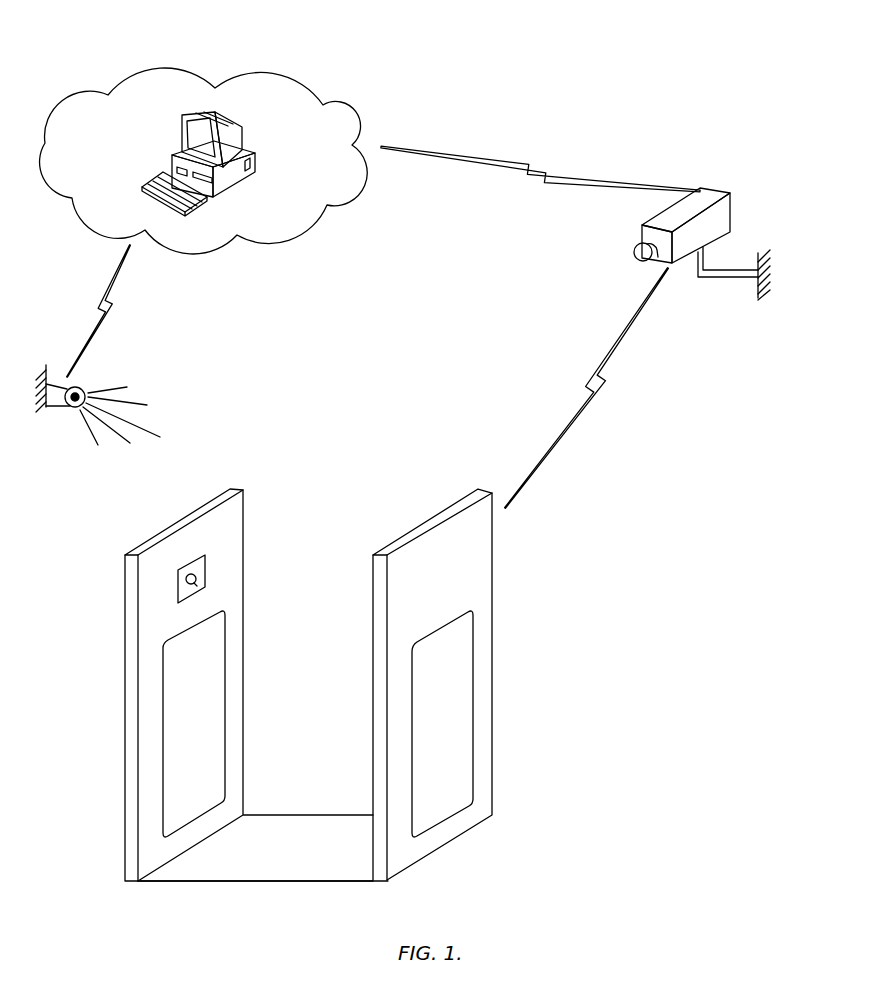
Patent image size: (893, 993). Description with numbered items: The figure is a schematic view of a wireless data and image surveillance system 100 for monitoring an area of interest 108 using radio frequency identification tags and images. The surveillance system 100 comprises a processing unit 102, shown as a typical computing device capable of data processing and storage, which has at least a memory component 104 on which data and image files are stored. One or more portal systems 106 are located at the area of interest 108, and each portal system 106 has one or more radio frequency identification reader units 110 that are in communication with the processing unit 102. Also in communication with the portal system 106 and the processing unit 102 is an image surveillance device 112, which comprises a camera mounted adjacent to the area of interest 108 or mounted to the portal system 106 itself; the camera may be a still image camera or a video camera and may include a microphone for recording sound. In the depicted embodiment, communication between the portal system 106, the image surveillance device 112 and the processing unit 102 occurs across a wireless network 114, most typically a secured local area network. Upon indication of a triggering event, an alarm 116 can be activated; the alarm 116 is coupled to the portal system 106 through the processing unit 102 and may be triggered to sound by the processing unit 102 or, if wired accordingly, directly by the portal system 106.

The surveillance system 100 is at (637, 52).
The processing unit 102 is at (268, 70).
The memory component 104 is at (235, 178).
The portal system 106 is at (326, 707).
The area of interest 108 is at (191, 924).
The radio frequency identification (RFID) reader unit 110 is at (185, 722).
The image surveillance device 112 is at (722, 217).
The wireless network 114 is at (533, 168).
The alarm 116 is at (57, 398).